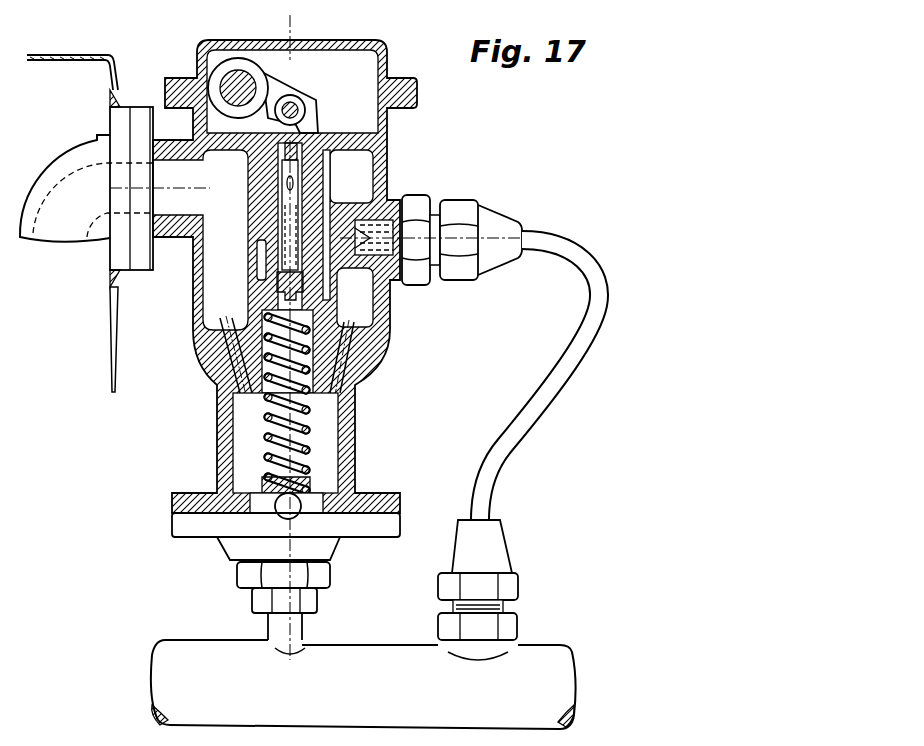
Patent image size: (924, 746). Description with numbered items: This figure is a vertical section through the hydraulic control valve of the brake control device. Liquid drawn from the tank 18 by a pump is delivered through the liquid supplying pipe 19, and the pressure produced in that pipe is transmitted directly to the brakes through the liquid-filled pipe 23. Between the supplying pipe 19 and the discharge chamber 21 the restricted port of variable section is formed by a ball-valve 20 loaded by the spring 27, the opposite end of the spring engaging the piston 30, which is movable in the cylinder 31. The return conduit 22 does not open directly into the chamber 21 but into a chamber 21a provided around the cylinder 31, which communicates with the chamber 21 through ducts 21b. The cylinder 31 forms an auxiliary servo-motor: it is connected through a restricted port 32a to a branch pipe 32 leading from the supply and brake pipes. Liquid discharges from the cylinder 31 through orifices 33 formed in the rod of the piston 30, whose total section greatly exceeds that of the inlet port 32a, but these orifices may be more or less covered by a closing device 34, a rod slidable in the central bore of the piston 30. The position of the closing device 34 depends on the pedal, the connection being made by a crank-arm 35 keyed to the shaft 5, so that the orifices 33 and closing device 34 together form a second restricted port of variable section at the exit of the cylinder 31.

The shaft 5 is at (228, 80).
The crank-arm 35 is at (292, 94).
The return conduit 22 is at (62, 172).
The closing device 34 is at (351, 176).
The cylinder 31 is at (250, 262).
The orifices 33 is at (262, 290).
The tank 18 is at (107, 327).
The chamber 21a is at (205, 330).
The ducts 21b is at (220, 378).
The discharge chamber 21 is at (243, 421).
The spring 27 is at (308, 427).
The piston 30 is at (360, 342).
The restricted port 32a is at (396, 283).
The branch pipe 32 is at (565, 248).
The ball-valve 20 is at (300, 503).
The liquid supplying pipe 19 is at (350, 660).
The pipe 23 is at (553, 665).